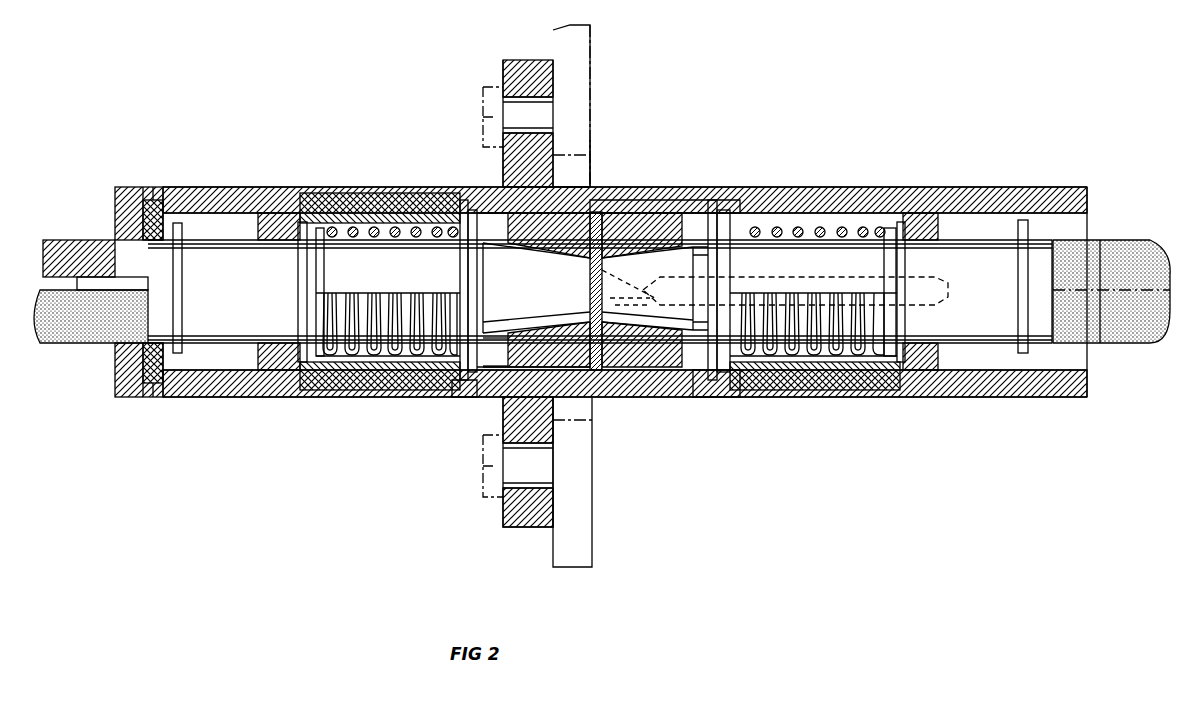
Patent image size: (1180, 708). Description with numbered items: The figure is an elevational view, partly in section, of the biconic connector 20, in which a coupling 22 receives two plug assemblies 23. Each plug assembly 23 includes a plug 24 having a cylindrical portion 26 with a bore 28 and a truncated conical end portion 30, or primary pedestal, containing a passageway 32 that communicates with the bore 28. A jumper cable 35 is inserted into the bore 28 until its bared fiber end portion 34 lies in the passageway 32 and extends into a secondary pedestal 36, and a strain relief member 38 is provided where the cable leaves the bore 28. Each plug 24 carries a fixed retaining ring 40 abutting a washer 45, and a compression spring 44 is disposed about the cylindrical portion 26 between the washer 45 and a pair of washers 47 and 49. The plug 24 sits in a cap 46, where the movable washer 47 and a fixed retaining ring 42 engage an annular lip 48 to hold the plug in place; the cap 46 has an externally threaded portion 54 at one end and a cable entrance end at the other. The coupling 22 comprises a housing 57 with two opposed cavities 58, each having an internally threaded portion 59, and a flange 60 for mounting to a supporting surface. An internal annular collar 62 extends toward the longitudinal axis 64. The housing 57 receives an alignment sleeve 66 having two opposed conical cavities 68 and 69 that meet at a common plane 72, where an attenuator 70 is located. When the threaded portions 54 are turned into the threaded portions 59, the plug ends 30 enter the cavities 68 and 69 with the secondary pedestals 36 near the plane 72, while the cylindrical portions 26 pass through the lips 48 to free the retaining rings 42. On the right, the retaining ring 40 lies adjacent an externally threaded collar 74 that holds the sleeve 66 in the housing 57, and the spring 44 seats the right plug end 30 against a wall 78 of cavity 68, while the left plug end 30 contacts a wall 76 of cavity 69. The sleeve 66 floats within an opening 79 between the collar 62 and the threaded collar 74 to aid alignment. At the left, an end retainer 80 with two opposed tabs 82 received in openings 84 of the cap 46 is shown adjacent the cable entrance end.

The biconic connector 20 is at (676, 125).
The coupling 22 is at (452, 398).
The plug assembly 23 is at (250, 398).
The plug 24 is at (615, 370).
The cylindrical portion 26 is at (246, 289).
The bore 28 is at (910, 282).
The end portion 30 is at (545, 277).
The passageway 32 is at (652, 283).
The end portion of the fiber 34 is at (631, 299).
The jumper cable 35 is at (45, 258).
The secondary pedestal 36 is at (592, 298).
The strain relief member 38 is at (52, 343).
The retaining ring 40 is at (468, 276).
The retaining ring 42 is at (182, 282).
The compression spring 44 is at (370, 300).
The washer 45 is at (460, 258).
The cap 46 is at (238, 188).
The washer 47 is at (298, 268).
The annular lip 48 is at (283, 212).
The washer 49 is at (318, 284).
The externally threaded portion 54 is at (375, 198).
The housing 57 is at (558, 200).
The cavity 58 is at (462, 398).
The threaded portion 59 is at (405, 390).
The flange 60 is at (550, 86).
The annular collar 62 is at (522, 393).
The longitudinal axis 64 is at (1100, 258).
The alignment sleeve 66 is at (628, 212).
The conically shaped cavity 68 is at (668, 243).
The conically shaped cavity 69 is at (495, 352).
The attenuator 70 is at (583, 246).
The plane 72 is at (598, 143).
The externally threaded collar 74 is at (694, 392).
The wall 76 is at (547, 328).
The wall 78 is at (695, 332).
The opening 79 is at (565, 397).
The end retainer 80 is at (113, 220).
The tab 82 is at (155, 195).
The opening 84 is at (160, 187).